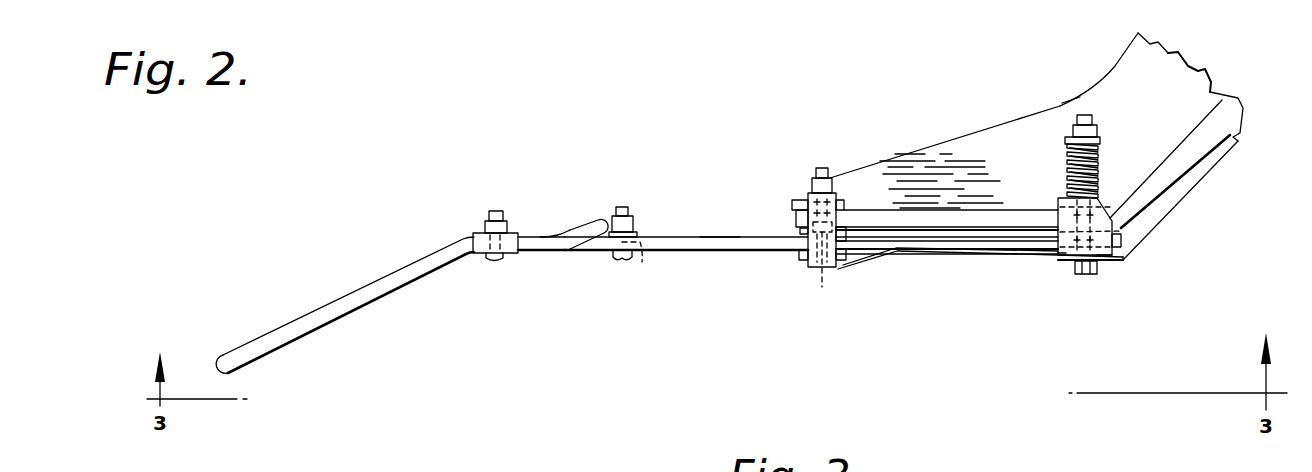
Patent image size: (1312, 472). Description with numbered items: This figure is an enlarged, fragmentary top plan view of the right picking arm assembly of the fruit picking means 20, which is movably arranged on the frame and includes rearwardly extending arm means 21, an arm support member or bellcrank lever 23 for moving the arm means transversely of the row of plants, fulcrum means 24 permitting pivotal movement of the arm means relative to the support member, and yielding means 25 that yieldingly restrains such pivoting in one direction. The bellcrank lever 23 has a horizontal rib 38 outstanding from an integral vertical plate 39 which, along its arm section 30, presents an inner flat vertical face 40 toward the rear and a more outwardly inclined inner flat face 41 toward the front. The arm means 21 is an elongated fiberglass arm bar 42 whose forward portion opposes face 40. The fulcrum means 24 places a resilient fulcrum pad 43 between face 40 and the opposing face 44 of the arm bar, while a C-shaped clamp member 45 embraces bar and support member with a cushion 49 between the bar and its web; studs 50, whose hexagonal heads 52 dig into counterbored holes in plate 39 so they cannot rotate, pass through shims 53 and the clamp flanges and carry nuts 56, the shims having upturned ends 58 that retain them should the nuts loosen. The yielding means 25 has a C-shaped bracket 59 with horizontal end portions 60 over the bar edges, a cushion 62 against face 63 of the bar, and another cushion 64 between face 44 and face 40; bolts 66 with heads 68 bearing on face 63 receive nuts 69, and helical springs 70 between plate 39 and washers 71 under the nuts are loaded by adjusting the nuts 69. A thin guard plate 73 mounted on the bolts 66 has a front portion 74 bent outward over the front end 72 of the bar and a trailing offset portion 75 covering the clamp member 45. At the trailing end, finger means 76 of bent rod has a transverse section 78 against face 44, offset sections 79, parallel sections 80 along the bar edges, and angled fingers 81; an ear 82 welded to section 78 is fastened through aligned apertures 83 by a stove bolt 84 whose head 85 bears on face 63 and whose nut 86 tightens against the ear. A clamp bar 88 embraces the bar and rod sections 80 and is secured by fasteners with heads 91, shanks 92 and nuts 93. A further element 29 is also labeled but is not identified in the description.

The fruit picking means 20 is at (892, 88).
The arm means 21 is at (697, 262).
The arm support member 23 is at (1016, 103).
The fulcrum means 24 is at (796, 217).
The yielding means 25 is at (1085, 100).
The shield panel upper edge 29 is at (1136, 42).
The arm section 30 is at (958, 140).
The horizontal rib 38 is at (1192, 76).
The vertical plate 39 is at (910, 215).
The inner flat vertical face 40 is at (990, 227).
The inclined inner flat face 41 is at (1243, 137).
The arm bar 42 is at (717, 236).
The fulcrum pad 43 is at (800, 232).
The outer side face of arm bar 44 is at (1005, 248).
The clamp member 45 is at (806, 266).
The cushion 49 is at (800, 255).
The studs 50 is at (820, 166).
The hexagonal heads 52 is at (820, 269).
The shim 53 is at (797, 202).
The nut 56 is at (808, 188).
The upturned ends 58 is at (845, 204).
The C-shaped bracket 59 is at (1104, 256).
The horizontal end portions 60 is at (1057, 205).
The cushion 62 is at (1060, 256).
The face of arm bar 63 is at (1130, 258).
The cushion 64 is at (1121, 231).
The bolt 66 is at (1074, 103).
The bolt head 68 is at (1087, 276).
The nut 69 is at (1093, 119).
The spring means 70 is at (1100, 151).
The washer 71 is at (1098, 131).
The front end of arm bar 72 is at (1122, 241).
The guard plate 73 is at (1020, 262).
The front portion of guard plate 74 is at (1195, 188).
The trailing laterally offset portion 75 is at (843, 271).
The finger means 76 is at (388, 301).
The central transverse vertical section 78 is at (597, 219).
The offset sections 79 is at (578, 231).
The parallel horizontal sections 80 is at (545, 252).
The angled fingers 81 is at (373, 291).
The ear 82 is at (640, 234).
The aligned horizontal apertures 83 is at (644, 262).
The stove bolt 84 is at (622, 206).
The head of stove bolt 85 is at (617, 261).
The nut 86 is at (634, 216).
The clamp bar 88 is at (480, 256).
The fastener head 91 is at (497, 262).
The fastener shank 92 is at (495, 210).
The nut 93 is at (478, 235).